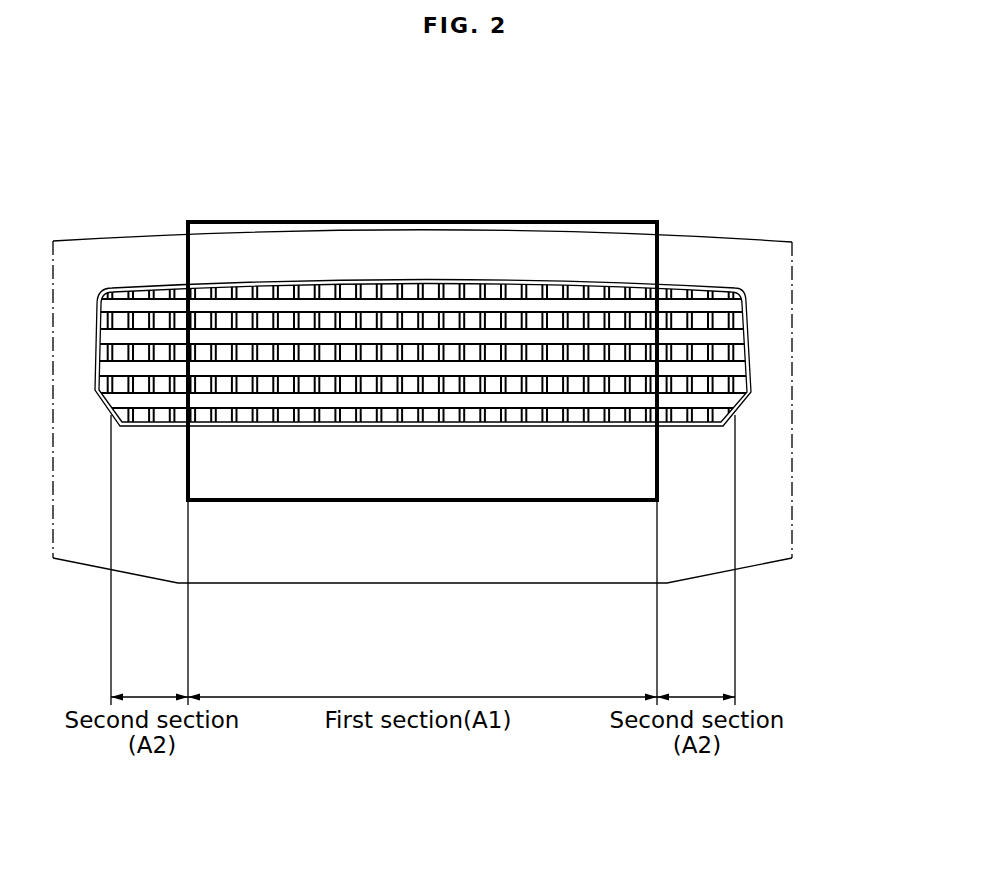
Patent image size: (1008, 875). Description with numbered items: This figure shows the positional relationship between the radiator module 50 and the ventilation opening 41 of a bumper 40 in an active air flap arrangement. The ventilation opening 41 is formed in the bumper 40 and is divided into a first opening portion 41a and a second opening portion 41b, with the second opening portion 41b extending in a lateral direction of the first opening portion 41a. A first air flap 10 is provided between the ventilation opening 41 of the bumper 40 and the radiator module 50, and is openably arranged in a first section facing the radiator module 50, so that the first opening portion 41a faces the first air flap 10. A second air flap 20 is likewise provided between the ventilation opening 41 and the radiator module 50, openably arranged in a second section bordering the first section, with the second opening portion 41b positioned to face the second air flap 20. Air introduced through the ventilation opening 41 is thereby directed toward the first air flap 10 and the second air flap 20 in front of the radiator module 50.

The first air flap 10 is at (482, 248).
The second air flap 20 is at (161, 316).
The bumper 40 is at (475, 553).
The ventilation opening 41 is at (427, 243).
The first opening portion 41a is at (567, 288).
The second opening portion 41b is at (743, 355).
The radiator module 50 is at (272, 212).